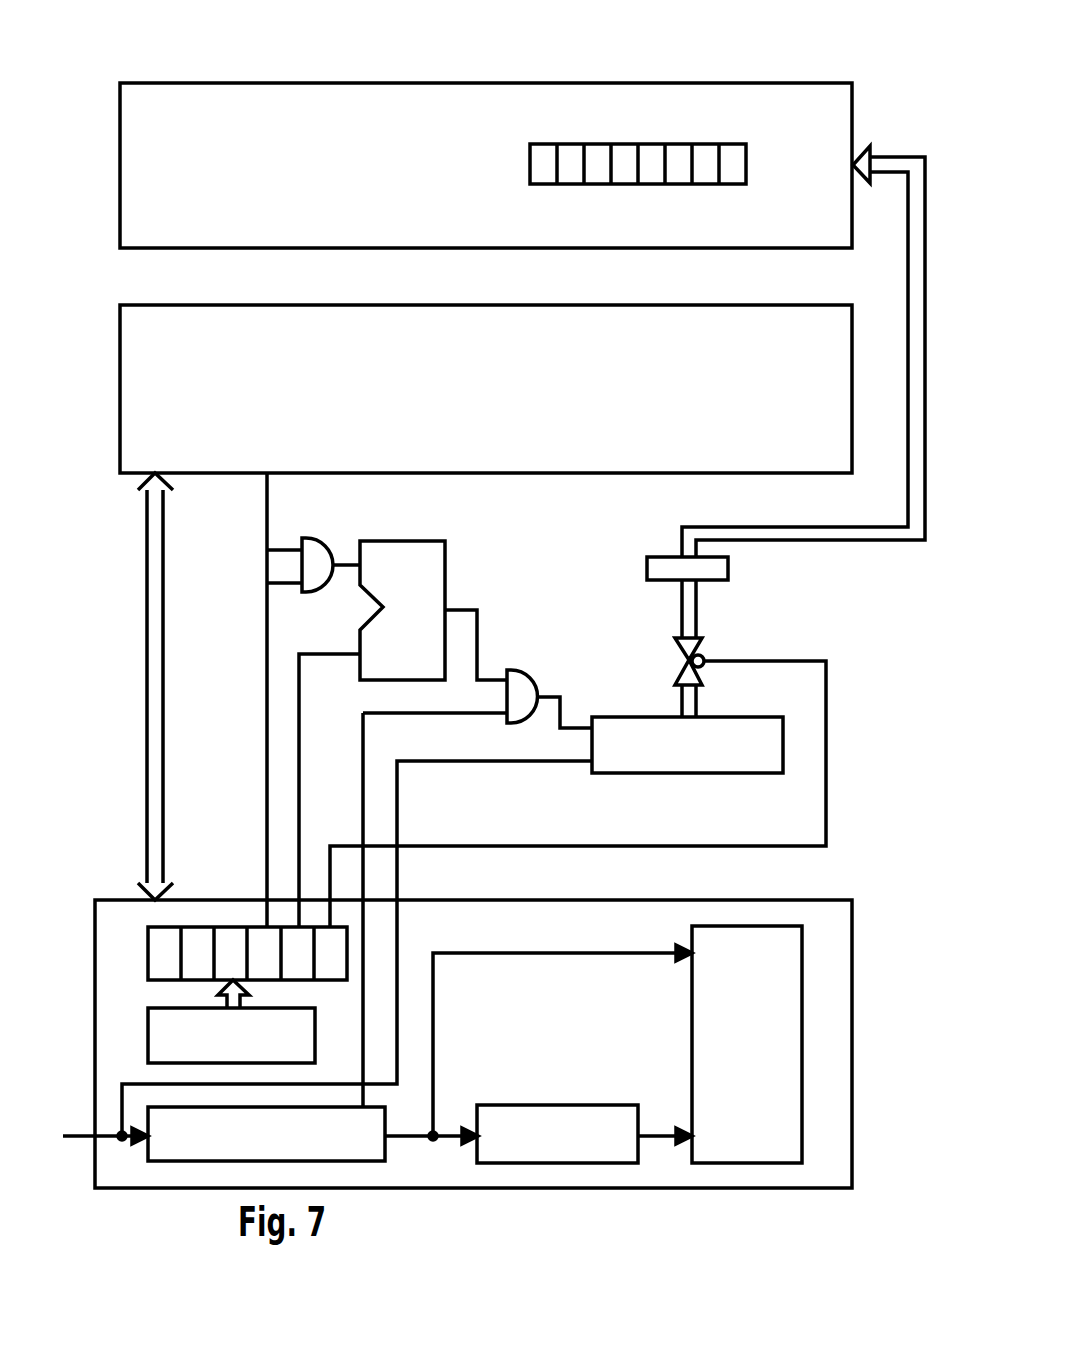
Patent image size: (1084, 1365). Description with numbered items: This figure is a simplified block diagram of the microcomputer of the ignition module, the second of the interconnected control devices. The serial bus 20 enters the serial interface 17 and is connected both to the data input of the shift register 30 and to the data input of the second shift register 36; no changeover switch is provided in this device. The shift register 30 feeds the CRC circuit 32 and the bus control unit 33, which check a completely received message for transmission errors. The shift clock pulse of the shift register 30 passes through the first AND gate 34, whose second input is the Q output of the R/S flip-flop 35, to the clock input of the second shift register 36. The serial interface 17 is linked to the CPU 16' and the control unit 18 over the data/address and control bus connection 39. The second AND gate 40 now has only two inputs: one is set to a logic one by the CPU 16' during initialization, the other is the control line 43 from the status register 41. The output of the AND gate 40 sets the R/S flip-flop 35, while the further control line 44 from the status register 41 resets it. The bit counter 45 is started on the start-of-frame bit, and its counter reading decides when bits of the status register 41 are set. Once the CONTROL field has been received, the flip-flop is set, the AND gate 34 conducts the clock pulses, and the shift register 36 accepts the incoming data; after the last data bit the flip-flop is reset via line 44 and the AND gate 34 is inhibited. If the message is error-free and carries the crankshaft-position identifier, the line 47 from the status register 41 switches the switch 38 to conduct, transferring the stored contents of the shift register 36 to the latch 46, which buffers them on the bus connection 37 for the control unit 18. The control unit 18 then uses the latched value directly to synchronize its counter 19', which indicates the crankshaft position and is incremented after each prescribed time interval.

The control unit 18 is at (221, 90).
The counter 19' is at (664, 132).
The CPU 16' is at (486, 389).
The data/address and control bus connection 39 is at (157, 658).
The control line 43 is at (265, 617).
The second AND gate 40 is at (316, 555).
The R/S flip-flop 35 is at (418, 554).
The control line 44 is at (302, 680).
The first AND gate 34 is at (515, 674).
The second shift register 36 is at (637, 725).
The latch 46 is at (660, 565).
The switch 38 is at (704, 644).
The bus connection 37 is at (893, 535).
The line 47 is at (828, 730).
The serial interface 17 is at (819, 1175).
The status register 41 is at (198, 927).
The bit counter 45 is at (217, 1051).
The shift register 30 is at (250, 1148).
The CRC circuit 32 is at (540, 1112).
The bus control unit 33 is at (702, 1035).
The serial bus 20 is at (85, 1142).